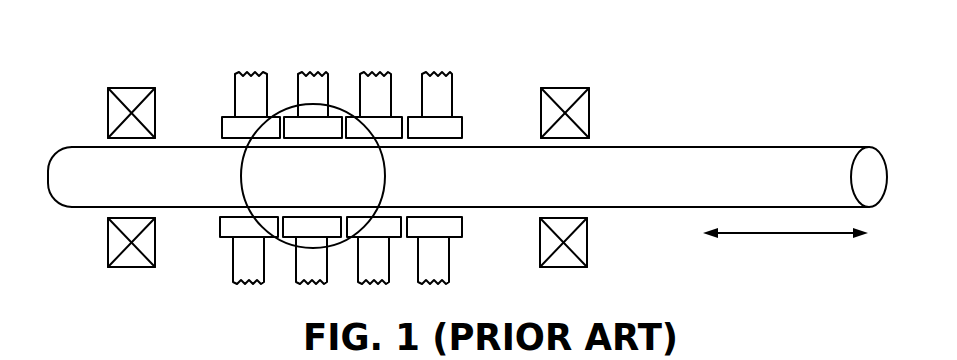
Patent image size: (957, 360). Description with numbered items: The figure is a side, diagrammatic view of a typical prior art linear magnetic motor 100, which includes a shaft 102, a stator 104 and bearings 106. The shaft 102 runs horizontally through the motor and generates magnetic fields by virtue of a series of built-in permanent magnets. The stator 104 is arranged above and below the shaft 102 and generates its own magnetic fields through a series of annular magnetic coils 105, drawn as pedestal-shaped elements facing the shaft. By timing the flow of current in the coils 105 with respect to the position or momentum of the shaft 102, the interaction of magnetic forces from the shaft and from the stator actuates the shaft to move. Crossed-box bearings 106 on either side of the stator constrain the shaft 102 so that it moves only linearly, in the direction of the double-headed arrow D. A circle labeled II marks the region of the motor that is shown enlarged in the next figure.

The linear magnetic motor 100 is at (766, 70).
The shaft 102 is at (645, 147).
The stator 104 is at (459, 30).
The annular magnetic coils 105 is at (251, 72).
The bearings 106 is at (133, 88).
The detail region shown in FIG. 2 II is at (385, 182).